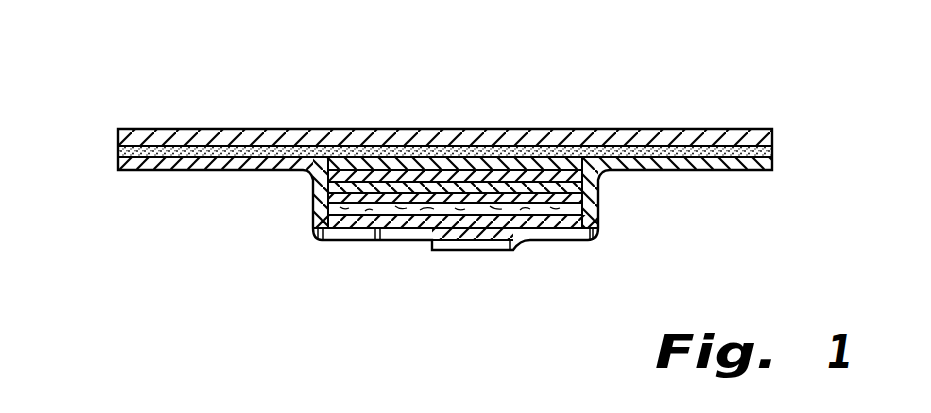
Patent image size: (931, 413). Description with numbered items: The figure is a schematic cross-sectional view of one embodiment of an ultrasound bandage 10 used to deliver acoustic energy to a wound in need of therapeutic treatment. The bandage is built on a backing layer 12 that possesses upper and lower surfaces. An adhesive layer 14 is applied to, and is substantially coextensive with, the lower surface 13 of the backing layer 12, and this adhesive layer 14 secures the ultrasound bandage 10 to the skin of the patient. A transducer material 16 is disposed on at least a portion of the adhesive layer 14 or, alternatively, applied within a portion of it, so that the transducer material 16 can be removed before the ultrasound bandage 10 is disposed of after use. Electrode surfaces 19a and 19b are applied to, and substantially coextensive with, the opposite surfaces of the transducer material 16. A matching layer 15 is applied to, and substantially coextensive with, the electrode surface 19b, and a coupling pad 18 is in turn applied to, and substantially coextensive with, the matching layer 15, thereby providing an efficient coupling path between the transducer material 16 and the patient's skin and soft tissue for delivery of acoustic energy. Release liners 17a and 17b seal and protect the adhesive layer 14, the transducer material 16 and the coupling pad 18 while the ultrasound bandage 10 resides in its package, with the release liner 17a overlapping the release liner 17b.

The ultrasound bandage 10 is at (147, 72).
The backing layer 12 is at (135, 137).
The lower surface 13 is at (638, 131).
The adhesive layer 14 is at (120, 152).
The matching layer 15 is at (498, 197).
The transducer material 16 is at (372, 185).
The release liner 17a is at (695, 168).
The release liner 17b is at (133, 164).
The coupling pad 18 is at (563, 204).
The electrode surface 19a is at (340, 162).
The electrode surface 19b is at (435, 192).